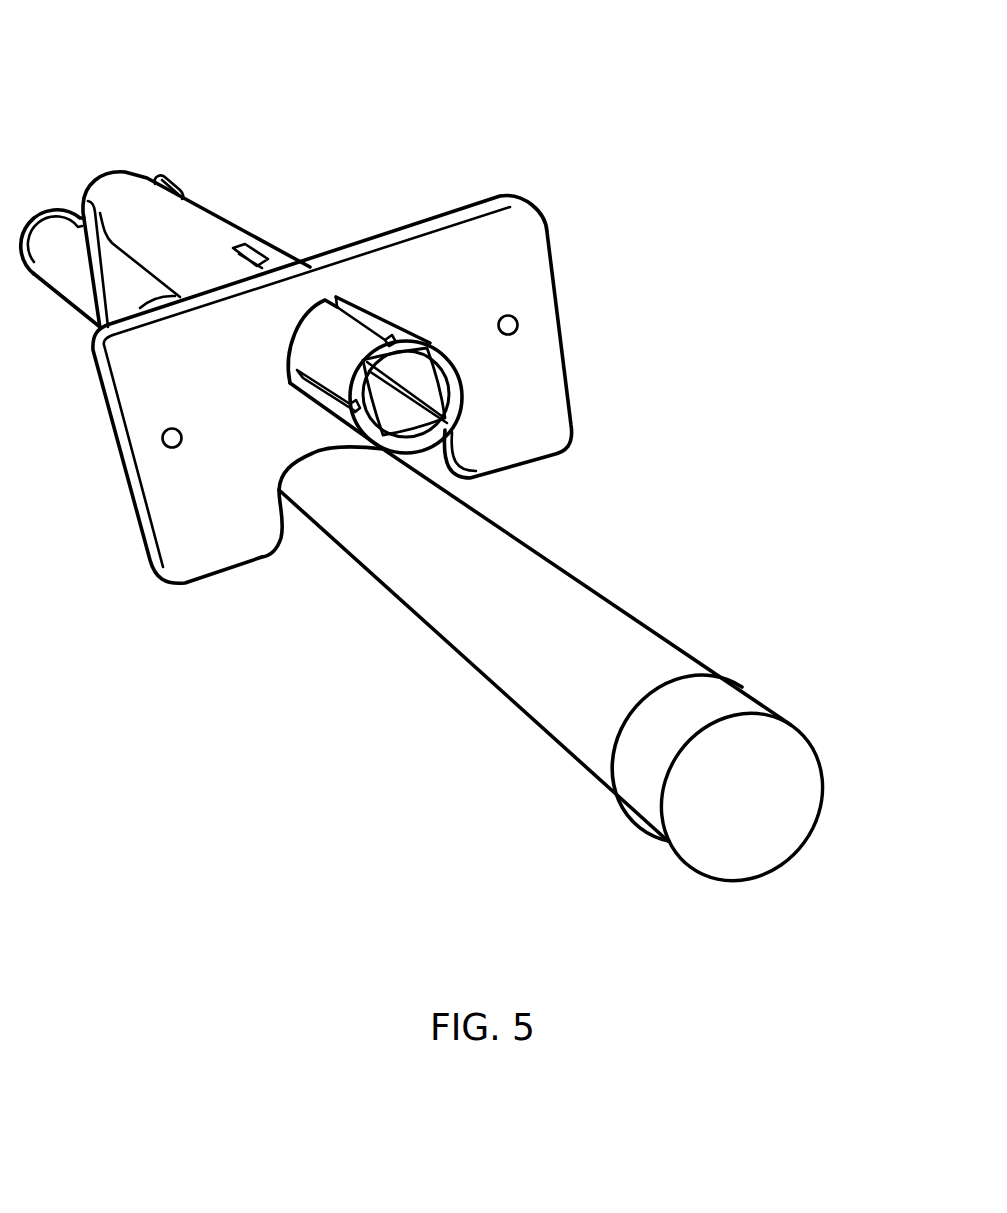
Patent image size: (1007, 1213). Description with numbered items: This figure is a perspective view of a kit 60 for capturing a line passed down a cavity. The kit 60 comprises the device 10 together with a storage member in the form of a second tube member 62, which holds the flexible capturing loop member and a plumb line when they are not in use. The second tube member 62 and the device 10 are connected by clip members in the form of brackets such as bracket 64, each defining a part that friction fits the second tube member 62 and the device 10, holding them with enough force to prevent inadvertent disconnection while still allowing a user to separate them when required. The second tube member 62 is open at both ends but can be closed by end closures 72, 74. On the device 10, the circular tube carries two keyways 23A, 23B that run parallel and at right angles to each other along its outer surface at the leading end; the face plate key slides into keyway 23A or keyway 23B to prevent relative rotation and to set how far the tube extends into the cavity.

The device 10 is at (408, 219).
The keyway 23A is at (255, 247).
The keyway 23B is at (293, 380).
The kit 60 is at (572, 644).
The second tube member 62 is at (423, 563).
The bracket 64 is at (180, 180).
The end closure 72 is at (43, 204).
The end closure 74 is at (763, 777).